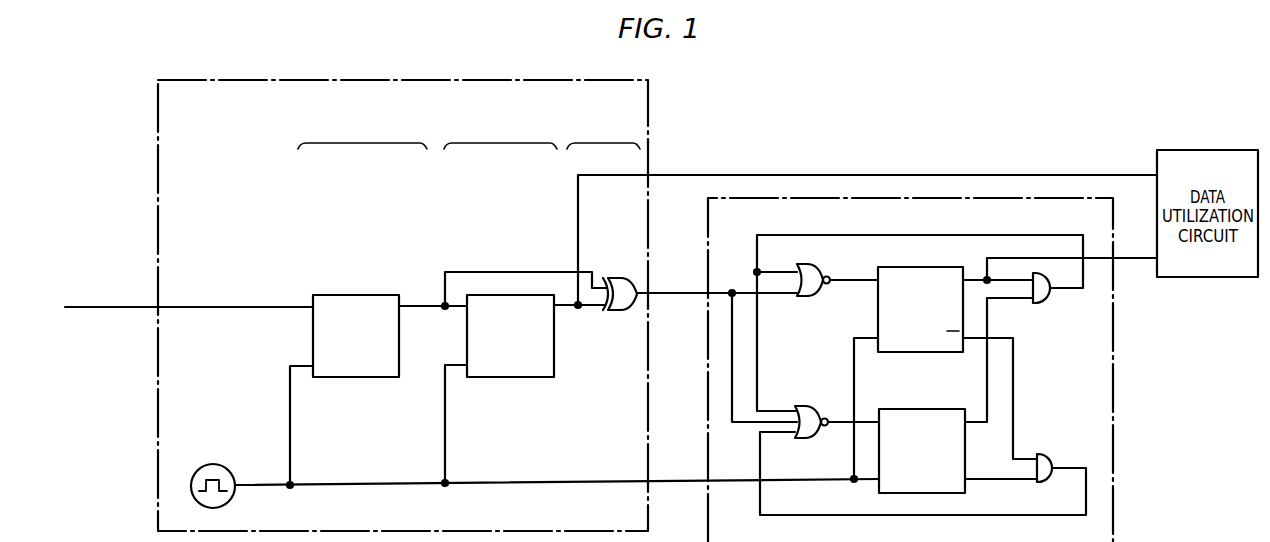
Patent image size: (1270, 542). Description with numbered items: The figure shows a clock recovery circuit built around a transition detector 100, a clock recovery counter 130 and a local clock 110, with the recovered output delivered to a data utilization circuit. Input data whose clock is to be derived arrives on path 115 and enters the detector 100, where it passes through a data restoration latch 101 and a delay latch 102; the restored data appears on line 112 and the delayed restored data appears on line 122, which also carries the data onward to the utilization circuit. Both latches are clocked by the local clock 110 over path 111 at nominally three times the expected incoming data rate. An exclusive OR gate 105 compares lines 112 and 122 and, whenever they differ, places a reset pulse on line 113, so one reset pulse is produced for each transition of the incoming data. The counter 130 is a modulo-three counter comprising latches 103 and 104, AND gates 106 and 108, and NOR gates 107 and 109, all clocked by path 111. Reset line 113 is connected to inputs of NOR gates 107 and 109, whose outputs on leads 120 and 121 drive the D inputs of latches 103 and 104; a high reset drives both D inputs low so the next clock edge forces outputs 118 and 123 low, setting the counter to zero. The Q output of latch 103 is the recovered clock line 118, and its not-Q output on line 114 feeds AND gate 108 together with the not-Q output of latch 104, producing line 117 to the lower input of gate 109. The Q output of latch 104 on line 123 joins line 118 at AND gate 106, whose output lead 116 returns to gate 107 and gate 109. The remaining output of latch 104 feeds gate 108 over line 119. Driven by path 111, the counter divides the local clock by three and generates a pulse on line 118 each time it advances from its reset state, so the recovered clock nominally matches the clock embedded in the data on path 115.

The transition detector 100 is at (403, 305).
The data restoration latch 101 is at (364, 295).
The delay latch 102 is at (512, 377).
The latch 103 is at (919, 267).
The latch 104 is at (921, 409).
The exclusive OR gate 105 is at (626, 277).
The AND gate 106 is at (1043, 302).
The NOR gate 107 is at (802, 298).
The AND gate 108 is at (1049, 454).
The NOR gate 109 is at (813, 406).
The local clock 110 is at (229, 465).
The local clock path 111 is at (504, 481).
The restored data line 112 is at (495, 272).
The reset line 113 is at (672, 296).
The not-Q output line of latch 103 114 is at (1013, 378).
The incoming data path 115 is at (111, 306).
The AND gate 106 output lead 116 is at (757, 259).
The AND gate 108 output line 117 is at (753, 514).
The recovered clock line 118 is at (976, 280).
The Q output line of flip-flop 104 119 is at (995, 481).
The NOR gate 107 output lead 120 is at (858, 283).
The NOR gate 109 output line 121 is at (846, 426).
The delayed restored data line 122 is at (563, 308).
The Q output line of latch 104 123 is at (987, 383).
The clock recovery counter 130 is at (708, 216).